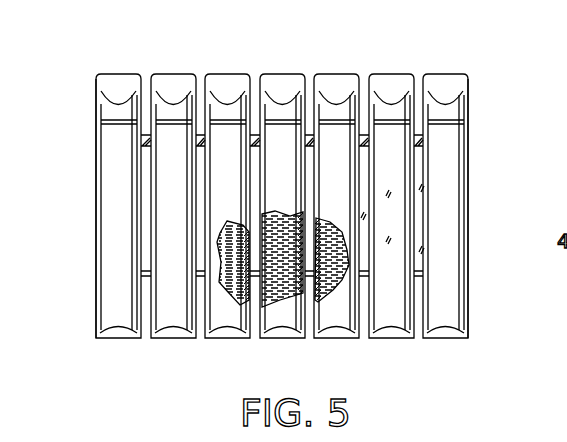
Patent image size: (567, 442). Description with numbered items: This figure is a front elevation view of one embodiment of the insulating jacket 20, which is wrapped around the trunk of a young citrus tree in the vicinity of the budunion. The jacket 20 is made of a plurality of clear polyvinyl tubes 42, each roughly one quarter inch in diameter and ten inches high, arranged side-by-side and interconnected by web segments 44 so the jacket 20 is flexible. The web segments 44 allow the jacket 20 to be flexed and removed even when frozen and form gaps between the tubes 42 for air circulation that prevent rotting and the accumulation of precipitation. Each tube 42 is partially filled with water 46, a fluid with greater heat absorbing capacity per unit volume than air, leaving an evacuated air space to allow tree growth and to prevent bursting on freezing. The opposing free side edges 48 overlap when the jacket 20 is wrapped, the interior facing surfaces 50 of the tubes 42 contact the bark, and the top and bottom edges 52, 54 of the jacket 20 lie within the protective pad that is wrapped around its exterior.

The insulating jacket 20 is at (299, 203).
The clear polyvinyl tubes 42 is at (225, 73).
The web segments 44 is at (258, 153).
The water 46 is at (233, 293).
The opposing free side edges 48 is at (97, 243).
The interior facing surfaces 50 is at (108, 110).
The top edge of the insulating jacket 52 is at (402, 73).
The bottom edge of the insulating jacket 54 is at (388, 338).